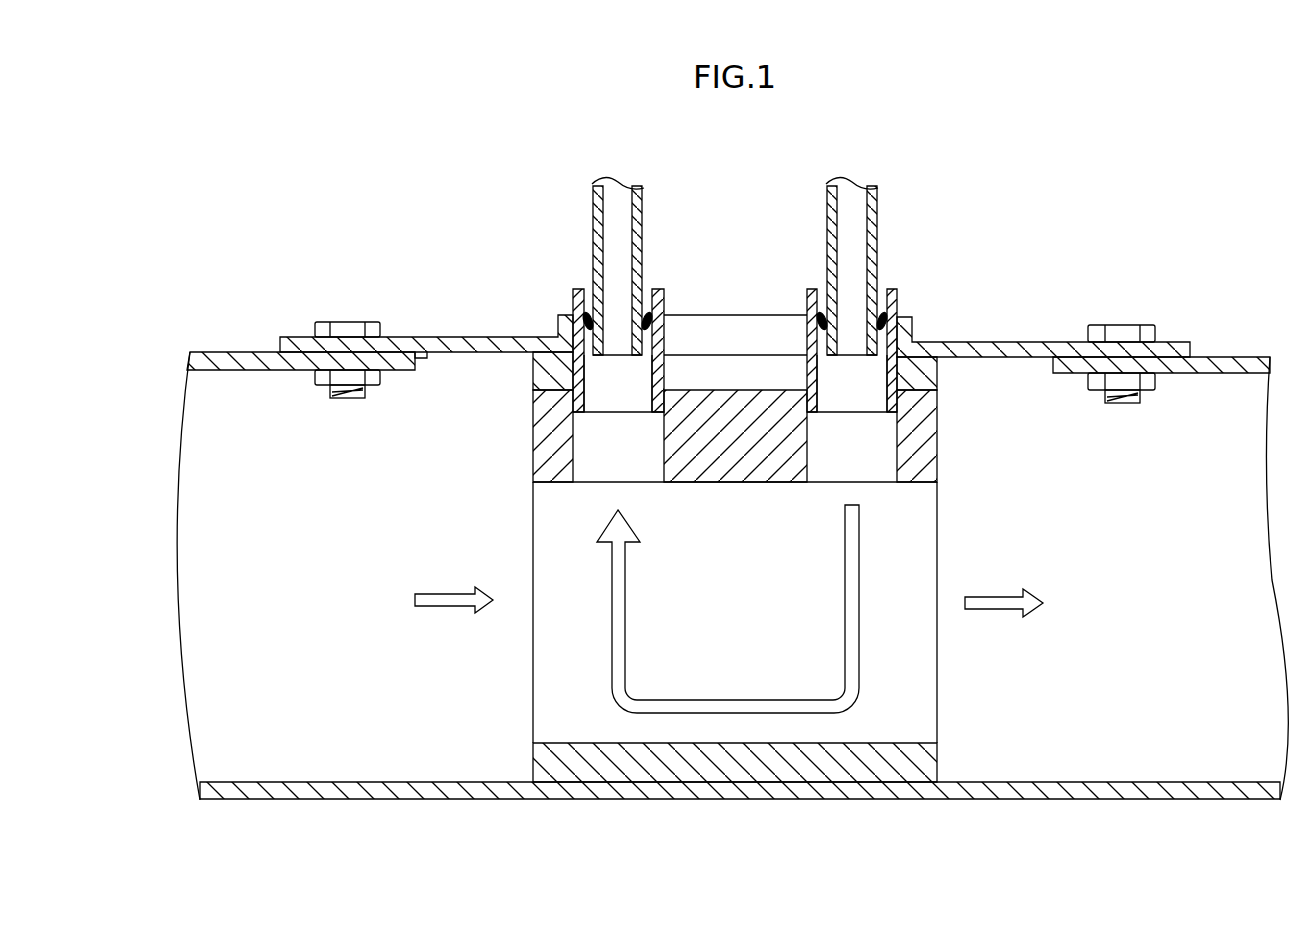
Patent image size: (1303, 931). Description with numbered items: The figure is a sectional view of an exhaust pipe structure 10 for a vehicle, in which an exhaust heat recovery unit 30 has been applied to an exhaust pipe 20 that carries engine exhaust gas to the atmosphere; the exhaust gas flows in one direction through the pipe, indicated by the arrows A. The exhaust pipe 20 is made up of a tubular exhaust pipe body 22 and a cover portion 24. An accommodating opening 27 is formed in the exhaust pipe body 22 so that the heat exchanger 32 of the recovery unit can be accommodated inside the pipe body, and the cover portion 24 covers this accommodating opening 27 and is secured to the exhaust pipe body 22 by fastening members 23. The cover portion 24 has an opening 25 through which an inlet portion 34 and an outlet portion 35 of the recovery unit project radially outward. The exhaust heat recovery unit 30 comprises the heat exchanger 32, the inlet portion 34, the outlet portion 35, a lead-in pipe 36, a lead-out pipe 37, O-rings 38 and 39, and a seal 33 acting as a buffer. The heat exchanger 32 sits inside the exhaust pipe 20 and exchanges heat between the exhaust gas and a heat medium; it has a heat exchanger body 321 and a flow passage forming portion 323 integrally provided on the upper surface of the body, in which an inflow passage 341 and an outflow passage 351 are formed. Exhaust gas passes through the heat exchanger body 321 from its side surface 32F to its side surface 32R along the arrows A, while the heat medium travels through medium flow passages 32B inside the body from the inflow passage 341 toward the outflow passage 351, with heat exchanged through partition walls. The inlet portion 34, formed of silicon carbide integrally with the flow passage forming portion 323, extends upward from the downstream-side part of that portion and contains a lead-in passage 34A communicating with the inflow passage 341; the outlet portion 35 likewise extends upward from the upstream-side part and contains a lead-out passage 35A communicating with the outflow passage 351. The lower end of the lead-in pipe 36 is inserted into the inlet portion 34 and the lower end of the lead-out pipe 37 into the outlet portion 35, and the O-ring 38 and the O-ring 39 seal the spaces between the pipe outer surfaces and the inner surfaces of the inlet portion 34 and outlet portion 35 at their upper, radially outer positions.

The exhaust pipe structure 10 is at (249, 181).
The exhaust pipe 20 is at (212, 350).
The exhaust pipe body 22 is at (270, 360).
The fastening members 23 is at (347, 322).
The cover portion 24 is at (481, 345).
The opening 25 is at (750, 349).
The accommodating opening 27 is at (424, 352).
The exhaust heat recovery unit 30 is at (713, 470).
The heat exchanger 32 is at (713, 566).
The heat exchanger body 321 is at (540, 520).
The flow passage forming portion 323 is at (525, 392).
The medium flow passages 32B is at (795, 705).
The side surface 32F is at (533, 685).
The side surface 32R is at (937, 683).
The seal 33 is at (542, 366).
The inlet portion 34 is at (852, 345).
The lead-in passage 34A is at (825, 368).
The outlet portion 35 is at (654, 335).
The lead-out passage 35A is at (650, 385).
The lead-in pipe 36 is at (830, 210).
The lead-out pipe 37 is at (597, 200).
The O-ring 38 is at (883, 315).
The O-ring 39 is at (649, 327).
The inflow passage 341 is at (887, 455).
The outflow passage 351 is at (656, 450).
The arrows A is at (440, 604).